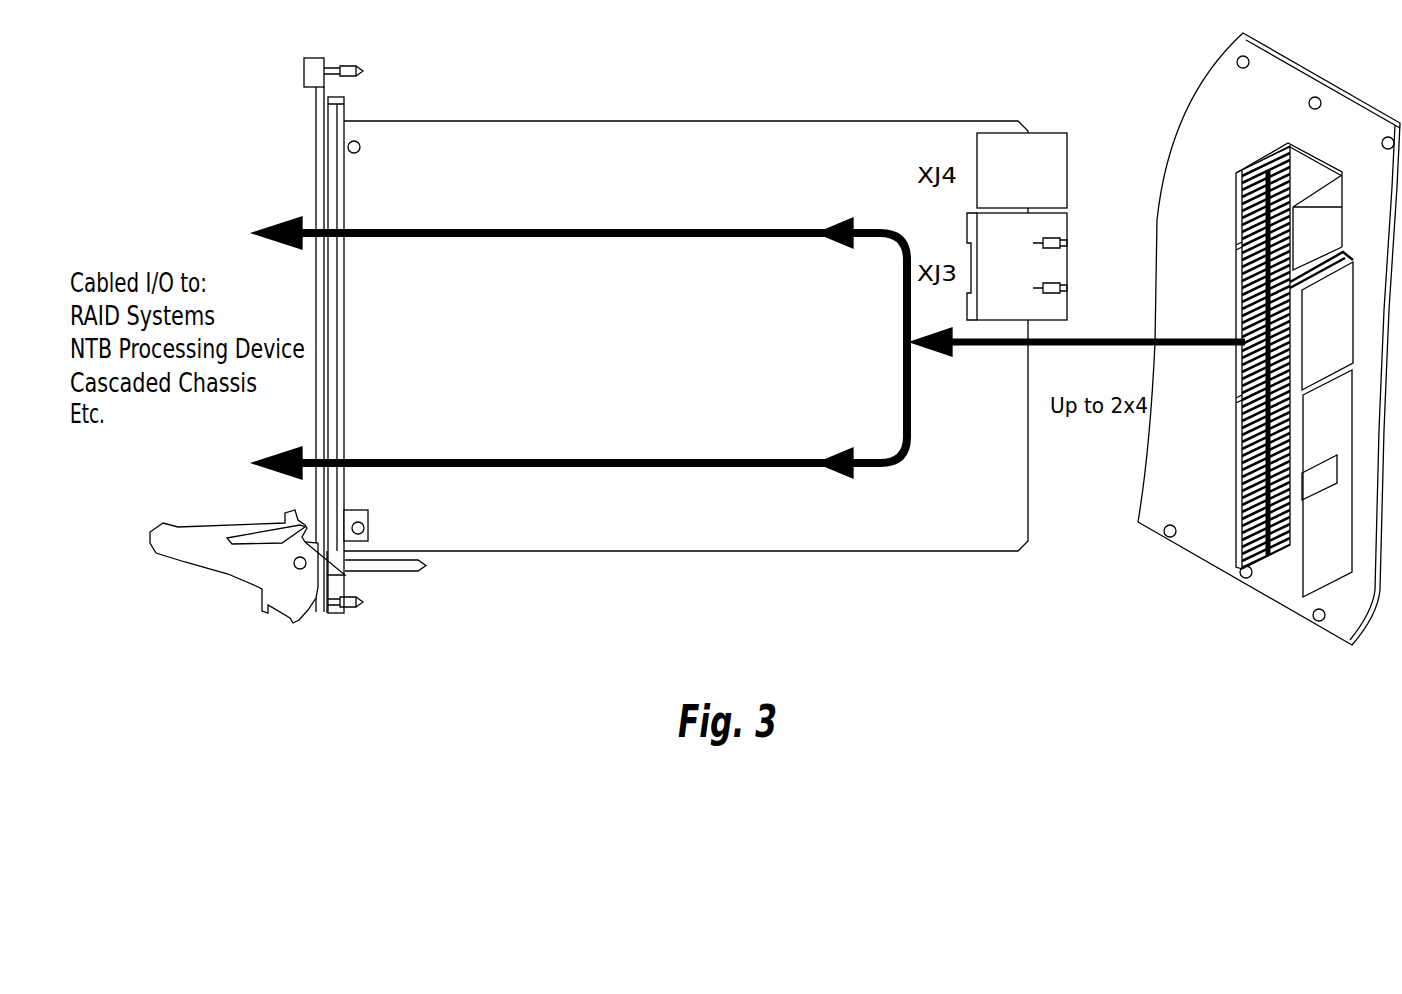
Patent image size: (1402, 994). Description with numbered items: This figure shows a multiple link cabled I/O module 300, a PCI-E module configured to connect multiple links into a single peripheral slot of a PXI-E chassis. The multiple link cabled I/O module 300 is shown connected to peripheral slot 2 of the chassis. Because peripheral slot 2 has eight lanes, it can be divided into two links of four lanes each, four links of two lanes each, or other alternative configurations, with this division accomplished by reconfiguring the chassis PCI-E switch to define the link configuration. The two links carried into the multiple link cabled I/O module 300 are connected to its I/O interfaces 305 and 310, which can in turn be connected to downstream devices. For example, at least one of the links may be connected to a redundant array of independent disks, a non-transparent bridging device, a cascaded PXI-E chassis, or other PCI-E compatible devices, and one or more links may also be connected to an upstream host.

The multiple link cabled I/O module 300 is at (605, 148).
The I/O interface 305 is at (395, 232).
The I/O interface 310 is at (395, 462).
The peripheral slot 2 is at (1275, 573).